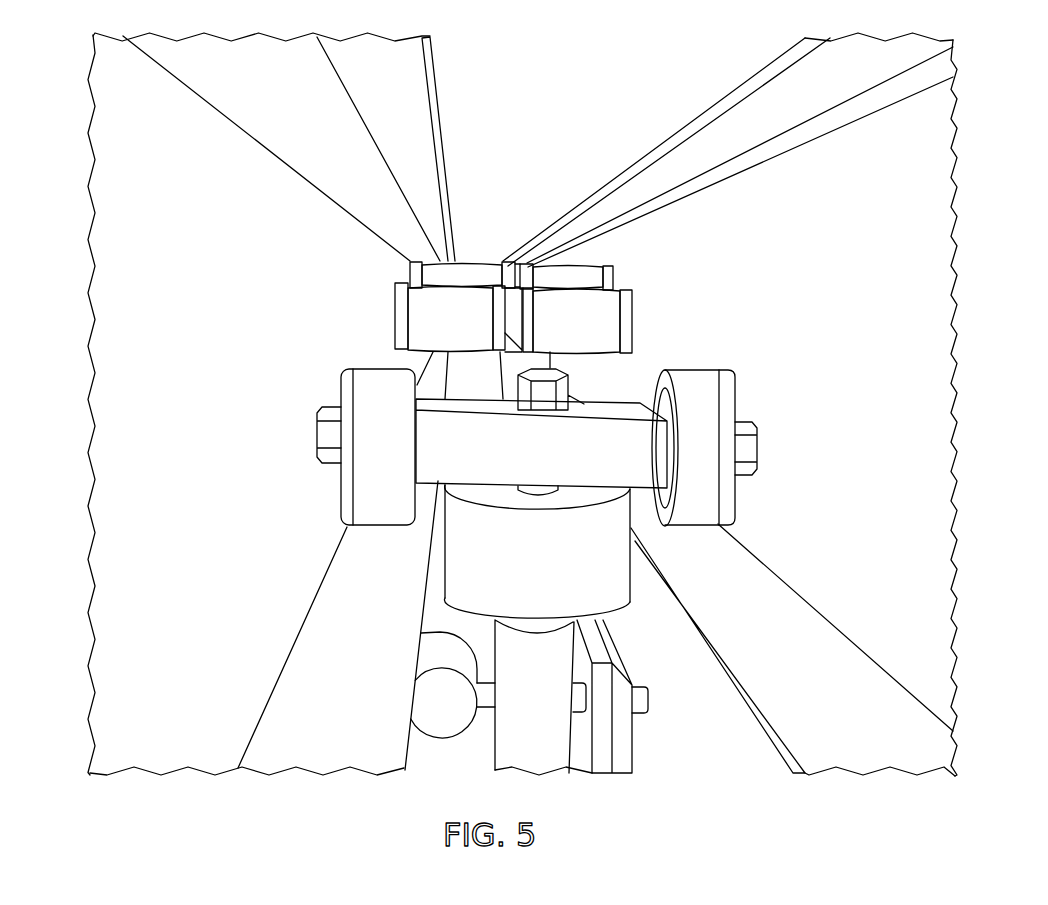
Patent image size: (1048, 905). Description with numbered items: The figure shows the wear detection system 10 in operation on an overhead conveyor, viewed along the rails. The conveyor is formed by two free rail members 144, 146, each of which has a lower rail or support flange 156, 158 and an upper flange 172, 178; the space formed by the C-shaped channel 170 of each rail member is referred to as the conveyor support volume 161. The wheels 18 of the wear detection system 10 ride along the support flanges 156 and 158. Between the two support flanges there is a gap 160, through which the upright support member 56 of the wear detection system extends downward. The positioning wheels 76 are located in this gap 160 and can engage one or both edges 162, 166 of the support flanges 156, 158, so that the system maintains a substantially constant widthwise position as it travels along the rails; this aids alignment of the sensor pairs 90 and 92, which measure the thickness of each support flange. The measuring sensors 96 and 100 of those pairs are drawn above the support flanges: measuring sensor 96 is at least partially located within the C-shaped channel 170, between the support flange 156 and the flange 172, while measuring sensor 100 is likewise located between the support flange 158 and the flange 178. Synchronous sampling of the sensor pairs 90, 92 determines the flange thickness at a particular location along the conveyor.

The wear detection system 10 is at (810, 650).
The wheels 18 is at (367, 372).
The upright support member 56 is at (627, 750).
The positioning wheels 76 is at (613, 570).
The sensor pair 90 is at (396, 222).
The sensor pair 92 is at (662, 260).
The measuring sensor 96 is at (413, 318).
The measuring sensor 100 is at (612, 323).
The free rail member 144 is at (118, 286).
The free rail member 146 is at (928, 221).
The support flange 156 is at (316, 645).
The support flange 158 is at (872, 693).
The gap 160 is at (395, 733).
The conveyor support volume 161 is at (250, 465).
The edge 162 is at (423, 617).
The edge 166 is at (750, 710).
The C-shaped channel 170 is at (200, 145).
The flange 172 is at (413, 120).
The flange 178 is at (813, 100).